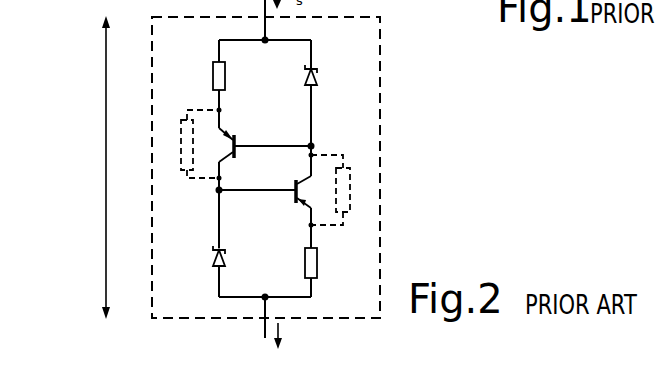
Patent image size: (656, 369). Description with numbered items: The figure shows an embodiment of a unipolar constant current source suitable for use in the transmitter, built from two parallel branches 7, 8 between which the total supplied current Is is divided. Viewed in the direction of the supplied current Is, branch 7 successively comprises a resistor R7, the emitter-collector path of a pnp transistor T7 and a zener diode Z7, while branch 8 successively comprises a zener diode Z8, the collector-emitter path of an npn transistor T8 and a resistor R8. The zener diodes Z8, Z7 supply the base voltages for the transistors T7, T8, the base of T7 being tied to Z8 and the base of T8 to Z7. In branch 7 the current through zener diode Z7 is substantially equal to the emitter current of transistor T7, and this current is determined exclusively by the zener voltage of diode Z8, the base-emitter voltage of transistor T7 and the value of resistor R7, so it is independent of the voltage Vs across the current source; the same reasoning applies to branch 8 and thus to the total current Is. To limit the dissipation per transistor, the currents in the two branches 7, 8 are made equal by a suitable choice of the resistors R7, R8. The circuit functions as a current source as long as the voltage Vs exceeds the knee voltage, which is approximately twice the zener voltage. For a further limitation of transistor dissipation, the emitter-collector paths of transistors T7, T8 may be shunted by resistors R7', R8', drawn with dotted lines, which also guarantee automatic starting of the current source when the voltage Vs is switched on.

The resistor R7 is at (196, 67).
The resistor R7' is at (189, 127).
The pnp transistor T7 is at (237, 137).
The zener diode Z7 is at (212, 258).
The branch 7 is at (190, 237).
The resistor R8 is at (329, 266).
The resistor R8' is at (342, 182).
The npn transistor T8 is at (294, 197).
The zener diode Z8 is at (313, 72).
The branch 8 is at (358, 119).
The voltage across current source Vs is at (92, 167).
The total current Is is at (287, 339).